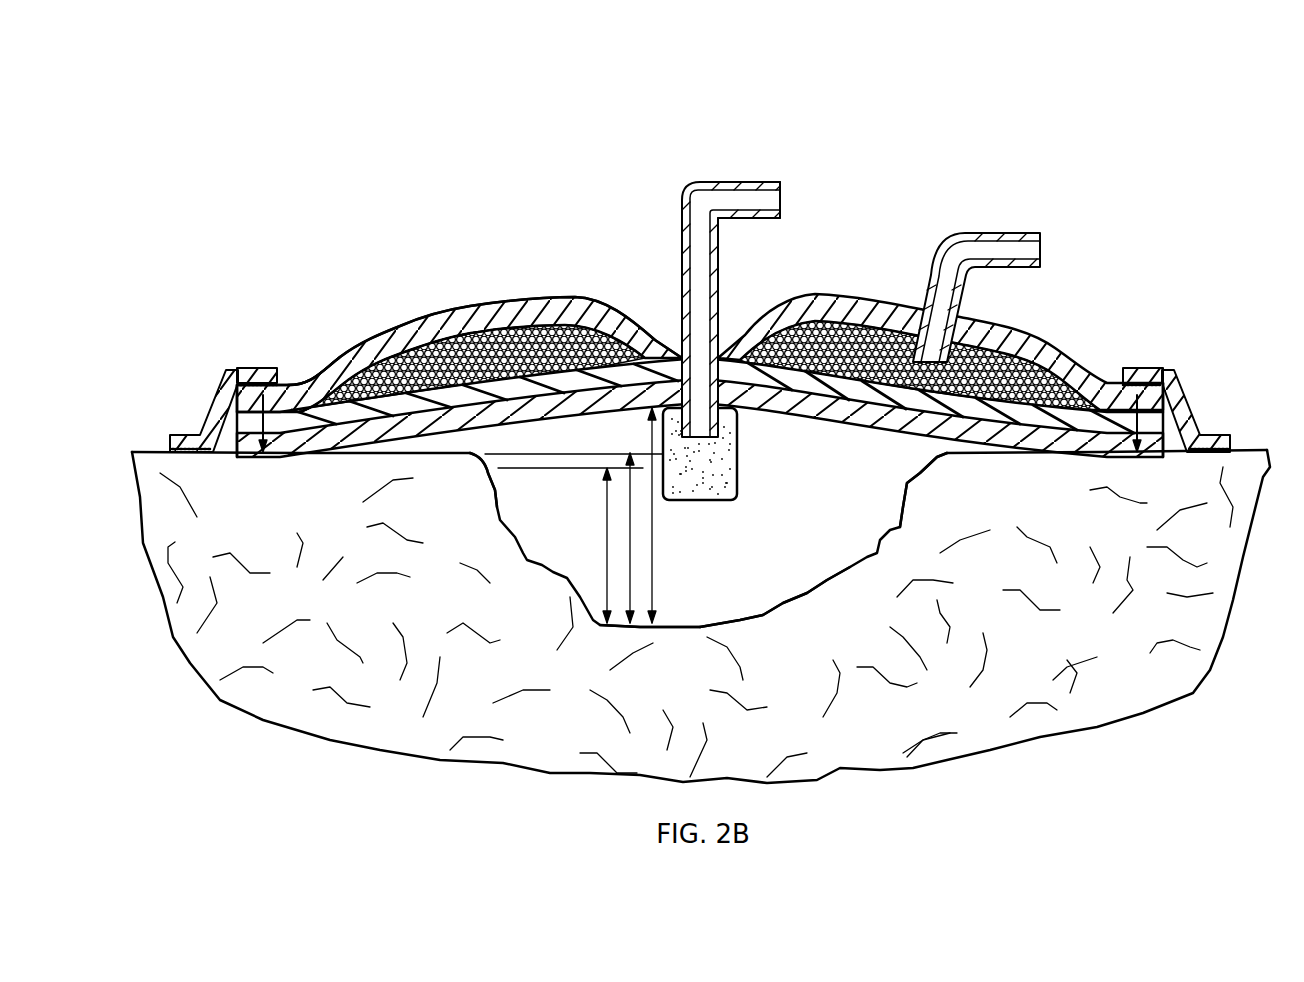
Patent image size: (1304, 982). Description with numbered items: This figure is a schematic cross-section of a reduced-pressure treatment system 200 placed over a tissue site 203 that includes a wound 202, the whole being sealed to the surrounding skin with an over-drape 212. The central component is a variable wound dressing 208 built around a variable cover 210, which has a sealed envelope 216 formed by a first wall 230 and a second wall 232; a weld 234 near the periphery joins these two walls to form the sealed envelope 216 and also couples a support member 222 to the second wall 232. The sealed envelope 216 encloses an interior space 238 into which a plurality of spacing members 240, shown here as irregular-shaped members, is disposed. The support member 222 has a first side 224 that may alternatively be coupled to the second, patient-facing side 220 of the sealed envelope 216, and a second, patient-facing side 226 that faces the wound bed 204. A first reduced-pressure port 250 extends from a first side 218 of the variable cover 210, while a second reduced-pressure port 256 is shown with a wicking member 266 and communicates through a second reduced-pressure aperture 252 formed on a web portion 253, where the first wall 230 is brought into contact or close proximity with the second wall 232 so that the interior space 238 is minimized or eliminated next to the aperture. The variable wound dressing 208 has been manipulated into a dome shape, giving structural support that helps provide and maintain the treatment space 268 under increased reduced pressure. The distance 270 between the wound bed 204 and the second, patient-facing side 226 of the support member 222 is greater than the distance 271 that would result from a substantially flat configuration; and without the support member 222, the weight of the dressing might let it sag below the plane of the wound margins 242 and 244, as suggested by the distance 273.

The reduced-pressure treatment system 200 is at (1147, 115).
The wound 202 is at (540, 581).
The tissue site 203 is at (675, 641).
The wound bed 204 is at (778, 616).
The variable wound dressing 208 is at (338, 345).
The variable cover 210 is at (425, 318).
The over-drape 212 is at (223, 380).
The sealed envelope 216 is at (372, 335).
The first side 218 is at (507, 300).
The second, patient-facing side 220 is at (793, 392).
The support member 222 is at (320, 458).
The first side 224 is at (883, 392).
The second, patient-facing side 226 is at (980, 455).
The first wall 230 is at (462, 307).
The second wall 232 is at (283, 425).
The weld 234 is at (258, 368).
The interior space 238 is at (548, 321).
The spacing members 240 is at (595, 330).
The wound margin 242 is at (480, 467).
The wound margin 244 is at (920, 470).
The first reduced-pressure port 250 is at (1003, 233).
The second reduced-pressure aperture 252 is at (720, 350).
The web portion 253 is at (684, 348).
The second reduced-pressure port 256 is at (745, 182).
The wicking member 266 is at (738, 483).
The treatment space 268 is at (770, 569).
The distance 270 is at (653, 578).
The distance 271 is at (633, 530).
The distance 273 is at (603, 533).